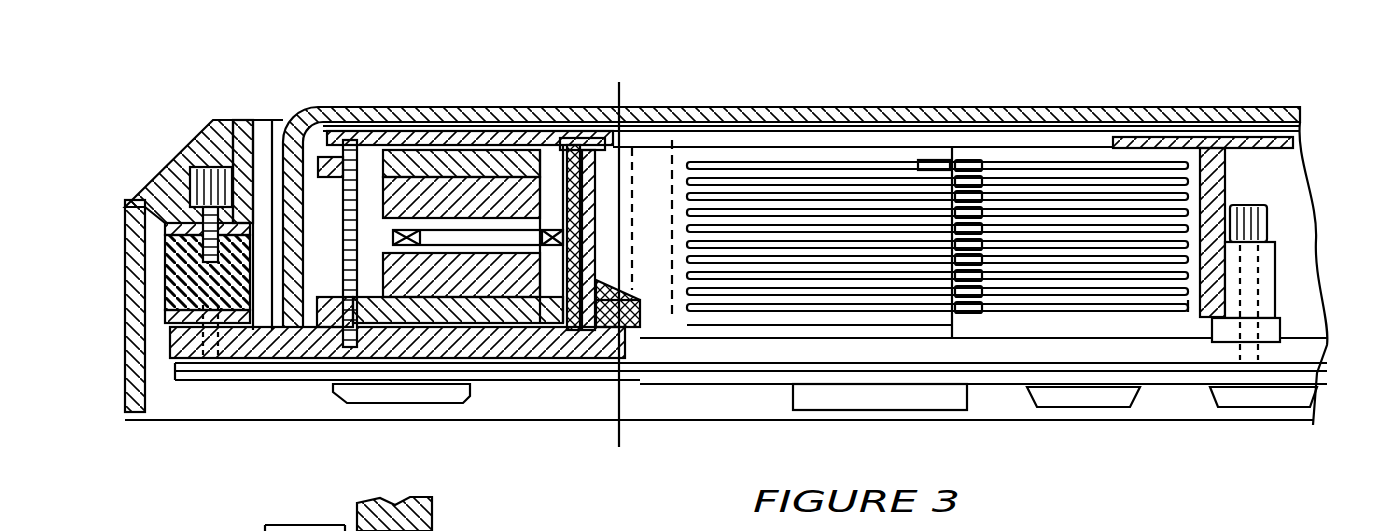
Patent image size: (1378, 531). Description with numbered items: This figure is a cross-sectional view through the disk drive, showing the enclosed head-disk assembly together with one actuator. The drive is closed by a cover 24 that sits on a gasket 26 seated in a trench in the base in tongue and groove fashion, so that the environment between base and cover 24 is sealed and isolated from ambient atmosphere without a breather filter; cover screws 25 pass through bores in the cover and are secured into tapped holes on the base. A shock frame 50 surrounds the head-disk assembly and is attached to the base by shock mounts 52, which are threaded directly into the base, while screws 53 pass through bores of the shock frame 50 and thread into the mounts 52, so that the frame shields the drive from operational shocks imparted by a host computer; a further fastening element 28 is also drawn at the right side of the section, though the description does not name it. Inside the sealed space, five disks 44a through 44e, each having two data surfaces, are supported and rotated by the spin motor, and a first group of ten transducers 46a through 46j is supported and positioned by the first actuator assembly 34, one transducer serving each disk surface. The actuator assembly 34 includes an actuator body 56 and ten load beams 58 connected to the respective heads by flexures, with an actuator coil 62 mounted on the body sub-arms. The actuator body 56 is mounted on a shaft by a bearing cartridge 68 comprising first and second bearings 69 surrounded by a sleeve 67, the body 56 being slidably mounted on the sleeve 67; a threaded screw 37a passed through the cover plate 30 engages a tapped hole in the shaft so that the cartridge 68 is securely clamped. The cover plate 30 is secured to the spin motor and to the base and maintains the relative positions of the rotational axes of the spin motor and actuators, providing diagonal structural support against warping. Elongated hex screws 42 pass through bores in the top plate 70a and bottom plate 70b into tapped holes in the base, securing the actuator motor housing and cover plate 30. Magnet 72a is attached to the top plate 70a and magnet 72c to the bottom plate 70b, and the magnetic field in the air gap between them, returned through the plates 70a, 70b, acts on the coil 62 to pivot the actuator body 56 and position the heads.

The cover 24 is at (337, 113).
The cover screws 25 is at (262, 528).
The gasket 26 is at (238, 358).
The screw 28 is at (1268, 220).
The cover plate 30 is at (1160, 140).
The actuator assembly 34 is at (705, 343).
The threaded screw 37a is at (668, 128).
The elongated hex screws 42 is at (280, 210).
The disk 44a is at (1172, 177).
The disk 44e is at (1150, 307).
The transducer 46a is at (977, 167).
The transducer 46j is at (980, 313).
The shock frame 50 is at (125, 238).
The shock mounts 52 is at (175, 293).
The screws 53 is at (210, 167).
The actuator body 56 is at (517, 293).
The load beams 58 is at (927, 163).
The actuator coil 62 is at (393, 240).
The sleeve 67 is at (560, 180).
The bearing cartridge 68 is at (593, 140).
The bearings 69 is at (627, 153).
The top plate 70a is at (407, 157).
The bottom plate 70b is at (400, 307).
The magnet 72a is at (470, 187).
The magnet 72c is at (455, 282).